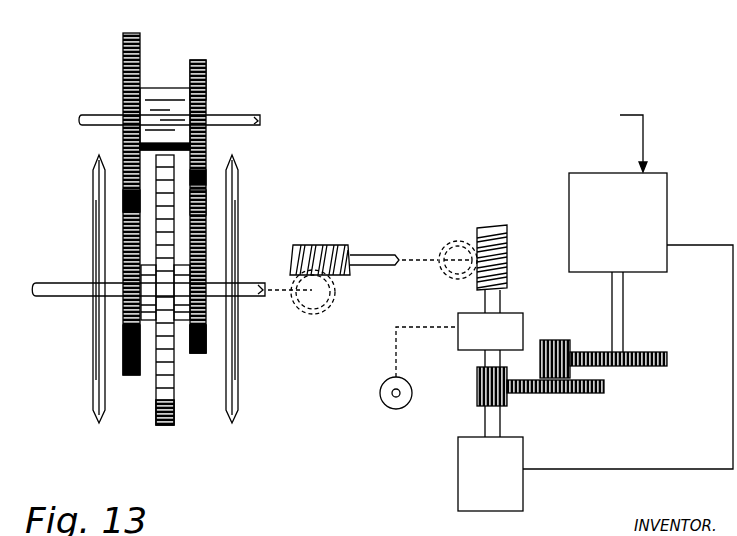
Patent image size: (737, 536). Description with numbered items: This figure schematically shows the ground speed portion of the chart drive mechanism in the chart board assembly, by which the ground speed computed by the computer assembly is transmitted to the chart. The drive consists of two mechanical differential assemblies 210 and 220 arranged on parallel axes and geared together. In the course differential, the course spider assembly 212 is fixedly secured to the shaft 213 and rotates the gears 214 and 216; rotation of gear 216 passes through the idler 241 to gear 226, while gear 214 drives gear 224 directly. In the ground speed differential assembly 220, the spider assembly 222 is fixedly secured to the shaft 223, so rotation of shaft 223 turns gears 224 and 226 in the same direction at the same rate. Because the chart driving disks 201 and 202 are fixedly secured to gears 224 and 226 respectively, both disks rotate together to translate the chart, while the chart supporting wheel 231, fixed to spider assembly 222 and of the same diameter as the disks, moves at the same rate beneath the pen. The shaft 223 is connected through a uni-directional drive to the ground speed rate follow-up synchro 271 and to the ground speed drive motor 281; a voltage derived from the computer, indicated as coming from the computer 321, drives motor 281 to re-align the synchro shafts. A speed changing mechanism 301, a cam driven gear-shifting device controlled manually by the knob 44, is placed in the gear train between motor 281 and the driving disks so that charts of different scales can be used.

The driving disk 201 is at (98, 392).
The driving disk 202 is at (240, 372).
The differential assembly 210 is at (173, 80).
The course spider assembly 212 is at (157, 100).
The shaft 213 is at (245, 113).
The gear 214 is at (128, 52).
The gear 216 is at (198, 72).
The differential assembly 220 is at (199, 411).
The spider assembly 222 is at (183, 320).
The shaft 223 is at (246, 281).
The gear 224 is at (129, 376).
The gear 226 is at (206, 328).
The chart supporting wheel 231 is at (169, 425).
The idler 241 is at (206, 205).
The ground speed rate follow-up synchro 271 is at (648, 198).
The ground speed drive motor 281 is at (468, 470).
The speed changing mechanism 301 is at (505, 327).
The computer 321 is at (552, 139).
The knob 44 is at (392, 407).